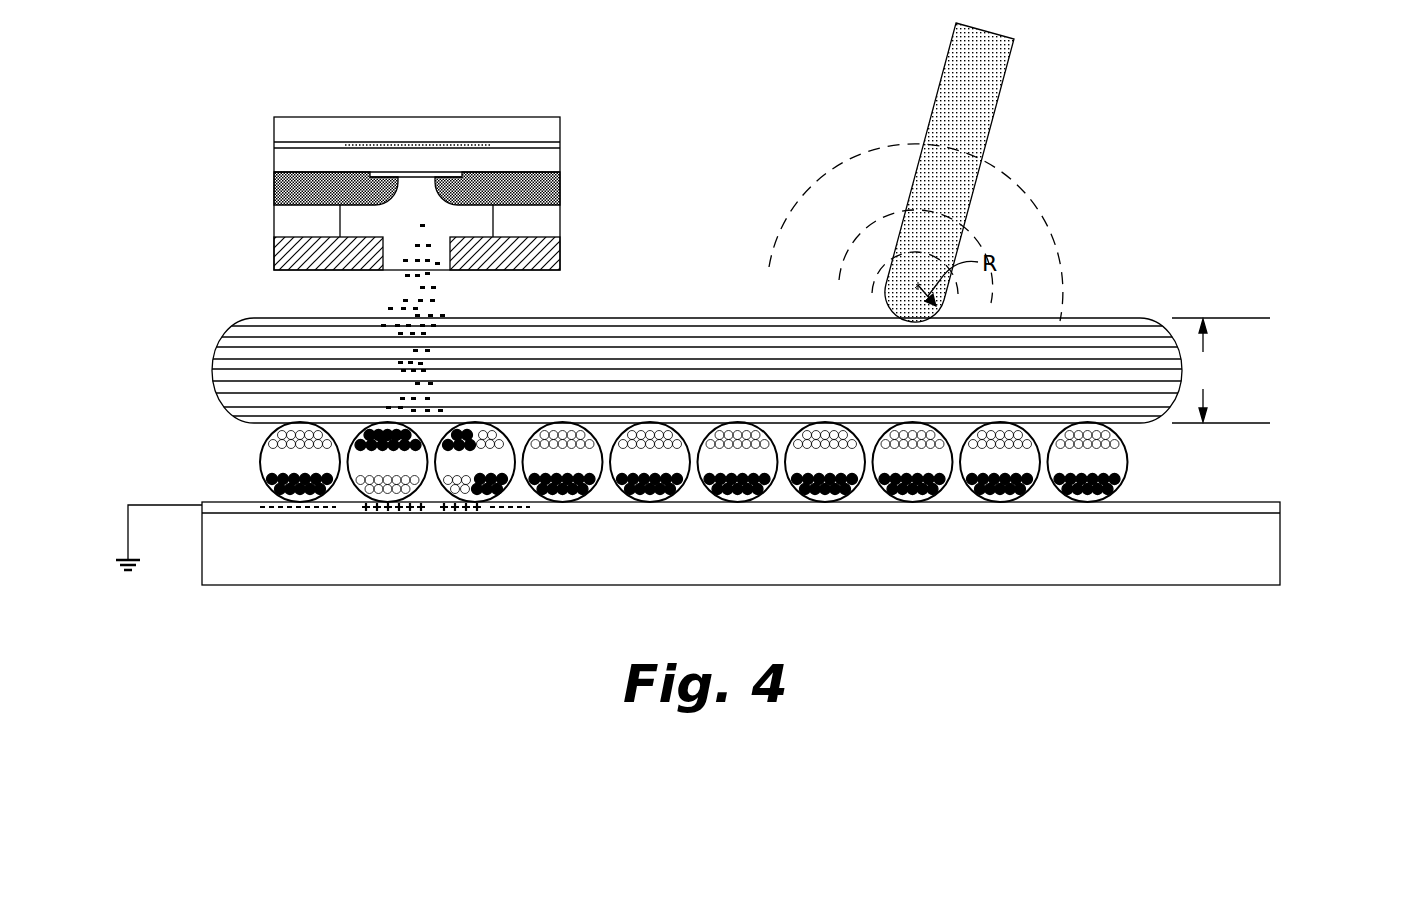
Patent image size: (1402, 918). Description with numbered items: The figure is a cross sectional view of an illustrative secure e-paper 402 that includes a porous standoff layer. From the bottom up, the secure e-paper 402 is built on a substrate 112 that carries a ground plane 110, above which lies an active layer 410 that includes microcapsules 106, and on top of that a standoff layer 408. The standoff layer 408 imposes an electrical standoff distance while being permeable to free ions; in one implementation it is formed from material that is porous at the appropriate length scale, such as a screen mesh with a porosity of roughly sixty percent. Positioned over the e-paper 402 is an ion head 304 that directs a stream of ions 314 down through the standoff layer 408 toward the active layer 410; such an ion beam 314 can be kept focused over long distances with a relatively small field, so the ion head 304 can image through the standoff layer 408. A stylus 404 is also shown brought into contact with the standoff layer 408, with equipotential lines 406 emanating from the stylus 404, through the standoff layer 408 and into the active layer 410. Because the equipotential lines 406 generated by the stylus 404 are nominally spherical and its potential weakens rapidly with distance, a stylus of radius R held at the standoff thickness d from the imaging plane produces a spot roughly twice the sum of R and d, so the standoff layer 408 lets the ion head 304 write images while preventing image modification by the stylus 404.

The ion head 304 is at (405, 172).
The stream of ions 314 is at (456, 318).
The stylus 404 is at (974, 172).
The equipotential lines 406 is at (882, 256).
The standoff layer 408 is at (669, 381).
The microcapsules 106 is at (1145, 497).
The ground plane 110 is at (208, 505).
The substrate 112 is at (750, 562).
The active layer 410 is at (683, 460).
The secure e-paper 402 is at (756, 457).